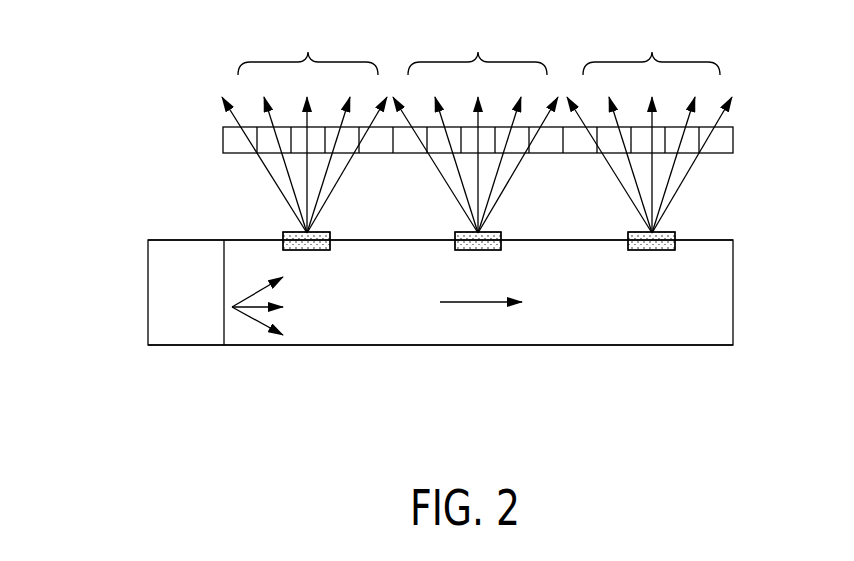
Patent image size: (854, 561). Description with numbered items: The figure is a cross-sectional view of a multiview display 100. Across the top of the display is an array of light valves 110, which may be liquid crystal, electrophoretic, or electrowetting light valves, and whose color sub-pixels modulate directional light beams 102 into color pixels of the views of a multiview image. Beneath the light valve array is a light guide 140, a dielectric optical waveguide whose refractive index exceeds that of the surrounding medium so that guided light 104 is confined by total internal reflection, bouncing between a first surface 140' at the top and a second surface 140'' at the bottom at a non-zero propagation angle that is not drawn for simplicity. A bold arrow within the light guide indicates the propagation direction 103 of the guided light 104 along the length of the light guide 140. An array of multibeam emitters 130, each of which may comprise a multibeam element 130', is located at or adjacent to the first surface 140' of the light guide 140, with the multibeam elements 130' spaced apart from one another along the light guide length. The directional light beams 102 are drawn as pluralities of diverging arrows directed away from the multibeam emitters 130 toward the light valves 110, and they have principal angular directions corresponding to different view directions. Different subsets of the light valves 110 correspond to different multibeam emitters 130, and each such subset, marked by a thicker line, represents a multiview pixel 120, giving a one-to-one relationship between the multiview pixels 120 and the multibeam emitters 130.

The multiview display 100 is at (105, 130).
The directional light beams 102 is at (683, 180).
The propagation direction 103 is at (467, 303).
The guided light 104 is at (260, 318).
The light valves 110 is at (733, 140).
The multiview pixel 120 is at (479, 45).
The multibeam emitters 130 is at (409, 205).
The multibeam element 130' is at (479, 241).
The light guide 140 is at (480, 292).
The first surface 140' is at (442, 208).
The second surface 140'' is at (441, 381).